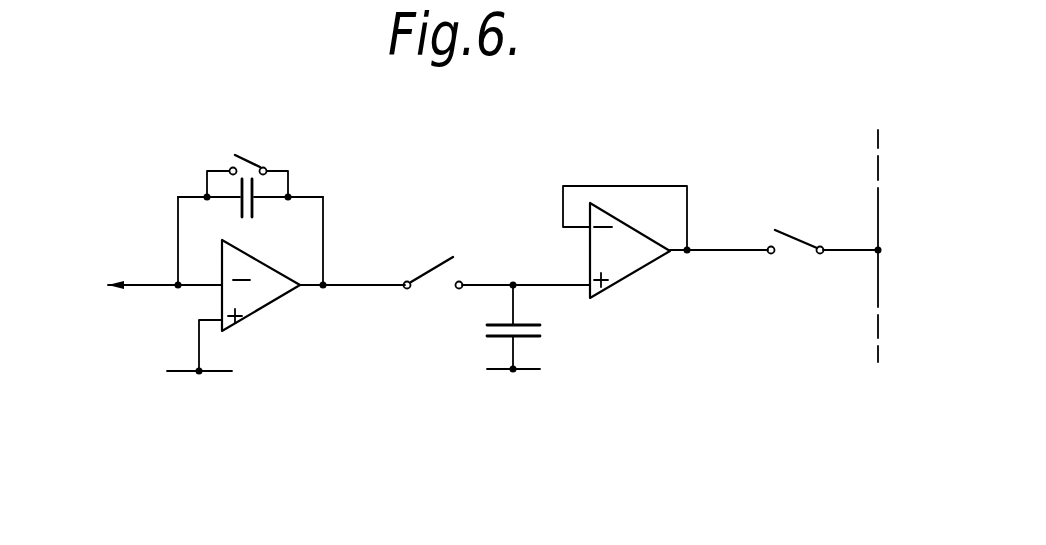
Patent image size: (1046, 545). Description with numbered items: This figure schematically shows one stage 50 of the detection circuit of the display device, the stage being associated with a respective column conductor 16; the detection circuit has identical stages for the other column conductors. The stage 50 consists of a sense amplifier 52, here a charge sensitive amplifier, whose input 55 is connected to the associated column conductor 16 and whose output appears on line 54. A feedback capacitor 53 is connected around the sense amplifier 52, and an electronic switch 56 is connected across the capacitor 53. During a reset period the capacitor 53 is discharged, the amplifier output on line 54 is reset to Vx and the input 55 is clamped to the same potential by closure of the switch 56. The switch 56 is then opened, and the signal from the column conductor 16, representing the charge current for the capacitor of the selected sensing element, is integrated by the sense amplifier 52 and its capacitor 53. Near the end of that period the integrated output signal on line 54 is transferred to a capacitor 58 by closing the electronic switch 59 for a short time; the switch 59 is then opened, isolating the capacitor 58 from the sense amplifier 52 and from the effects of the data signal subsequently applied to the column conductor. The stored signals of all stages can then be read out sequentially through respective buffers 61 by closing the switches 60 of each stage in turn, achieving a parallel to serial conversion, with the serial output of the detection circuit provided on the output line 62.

The column conductor 16 is at (100, 286).
The stage 50 is at (380, 406).
The sense amplifier 52 is at (270, 295).
The feedback capacitor 53 is at (257, 208).
The line 54 is at (380, 282).
The input 55 is at (148, 288).
The electronic switch 56 is at (255, 140).
The capacitor 58 is at (547, 330).
The electronic switch 59 is at (437, 292).
The switch 60 is at (789, 266).
The buffer 61 is at (642, 273).
The output line 62 is at (878, 308).